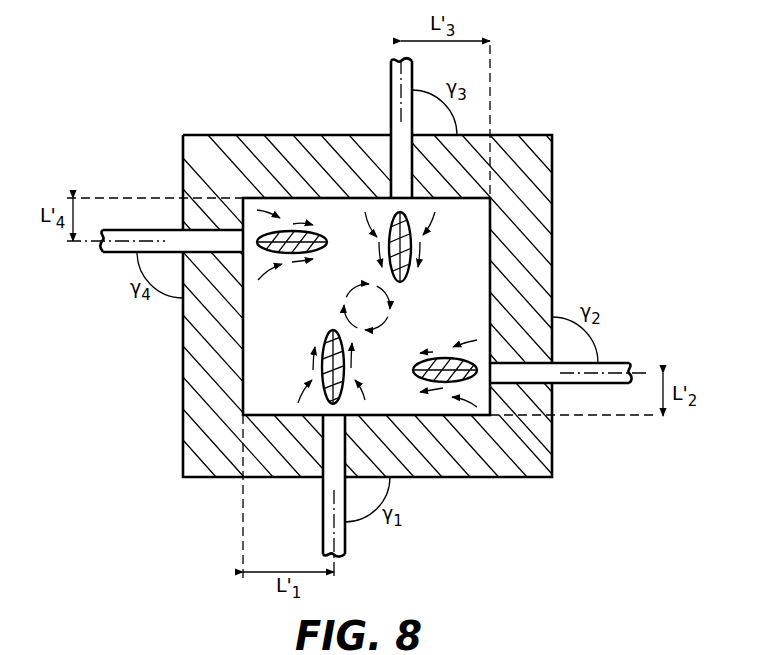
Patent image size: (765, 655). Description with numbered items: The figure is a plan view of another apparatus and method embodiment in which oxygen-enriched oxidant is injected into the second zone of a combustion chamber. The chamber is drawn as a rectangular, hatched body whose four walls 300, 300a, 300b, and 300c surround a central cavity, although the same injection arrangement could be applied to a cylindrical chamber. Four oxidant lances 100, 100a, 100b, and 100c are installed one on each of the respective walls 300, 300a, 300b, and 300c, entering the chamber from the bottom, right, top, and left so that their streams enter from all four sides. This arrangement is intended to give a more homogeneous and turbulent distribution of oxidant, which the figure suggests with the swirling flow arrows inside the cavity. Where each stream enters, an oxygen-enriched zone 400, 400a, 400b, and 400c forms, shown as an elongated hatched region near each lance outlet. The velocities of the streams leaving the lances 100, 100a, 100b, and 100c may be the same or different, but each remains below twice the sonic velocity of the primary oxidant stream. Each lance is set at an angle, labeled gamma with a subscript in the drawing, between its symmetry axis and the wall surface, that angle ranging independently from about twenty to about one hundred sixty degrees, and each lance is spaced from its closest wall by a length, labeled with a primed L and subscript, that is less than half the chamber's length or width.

The oxidant lance 100 is at (345, 543).
The oxidant lance 100a is at (620, 363).
The oxidant lance 100b is at (391, 90).
The oxidant lance 100c is at (120, 252).
The combustion chamber wall 300 is at (455, 455).
The combustion chamber wall 300a is at (540, 243).
The combustion chamber wall 300b is at (246, 133).
The combustion chamber wall 300c is at (190, 380).
The oxygen-enriched zone 400 is at (330, 370).
The oxygen-enriched zone 400a is at (450, 370).
The oxygen-enriched zone 400b is at (405, 250).
The oxygen-enriched zone 400c is at (286, 255).